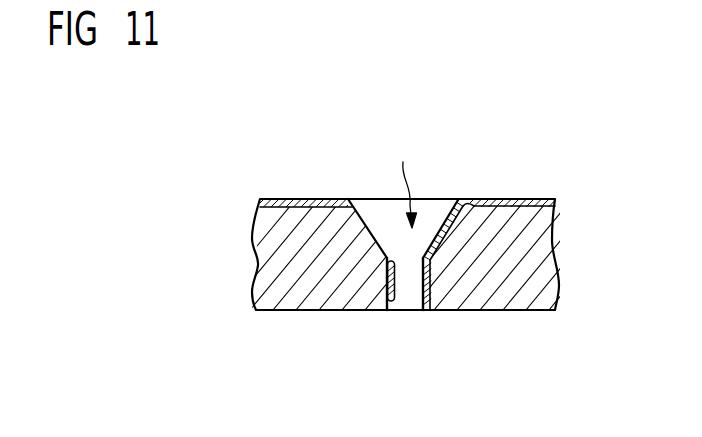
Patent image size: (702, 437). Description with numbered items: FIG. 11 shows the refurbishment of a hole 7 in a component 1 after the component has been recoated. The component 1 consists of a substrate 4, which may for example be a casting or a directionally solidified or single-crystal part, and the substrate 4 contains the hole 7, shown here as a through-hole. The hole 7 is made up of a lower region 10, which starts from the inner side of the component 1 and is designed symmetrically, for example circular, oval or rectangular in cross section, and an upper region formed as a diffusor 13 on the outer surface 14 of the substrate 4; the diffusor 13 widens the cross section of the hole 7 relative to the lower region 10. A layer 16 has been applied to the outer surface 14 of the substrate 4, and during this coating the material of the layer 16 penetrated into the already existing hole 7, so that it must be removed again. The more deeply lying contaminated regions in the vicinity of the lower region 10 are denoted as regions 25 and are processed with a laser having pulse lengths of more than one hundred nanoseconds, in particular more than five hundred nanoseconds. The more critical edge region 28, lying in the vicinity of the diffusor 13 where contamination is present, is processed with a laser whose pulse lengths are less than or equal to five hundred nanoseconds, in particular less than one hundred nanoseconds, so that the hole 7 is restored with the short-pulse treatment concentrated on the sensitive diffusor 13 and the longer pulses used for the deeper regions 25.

The component 1 is at (231, 317).
The substrate 4 is at (543, 268).
The hole 7 is at (407, 179).
The lower region 10 is at (406, 290).
The diffusor 13 is at (378, 205).
The outer surface 14 is at (517, 205).
The layer 16 is at (306, 203).
The more deeply lying regions 25 is at (395, 304).
The edge region 28 is at (456, 205).